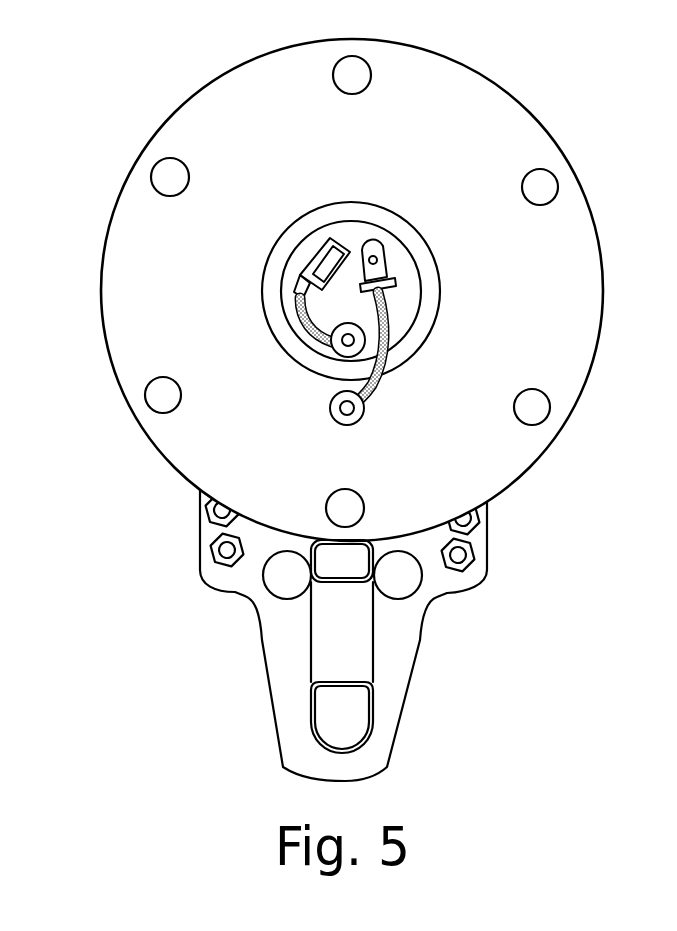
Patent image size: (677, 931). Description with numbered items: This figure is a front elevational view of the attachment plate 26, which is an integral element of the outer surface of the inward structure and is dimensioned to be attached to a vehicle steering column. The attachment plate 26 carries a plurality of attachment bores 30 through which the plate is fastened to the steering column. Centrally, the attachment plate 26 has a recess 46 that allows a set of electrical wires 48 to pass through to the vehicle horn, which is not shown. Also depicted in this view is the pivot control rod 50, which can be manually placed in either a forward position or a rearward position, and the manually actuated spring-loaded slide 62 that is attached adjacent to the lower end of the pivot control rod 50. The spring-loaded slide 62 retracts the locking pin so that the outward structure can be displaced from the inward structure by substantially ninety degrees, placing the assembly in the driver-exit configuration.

The attachment plate 26 is at (422, 93).
The attachment bores 30 is at (537, 183).
The recess 46 is at (395, 255).
The electrical wires 48 is at (335, 343).
The pivot control rod 50 is at (350, 565).
The spring-loaded slide 62 is at (345, 713).